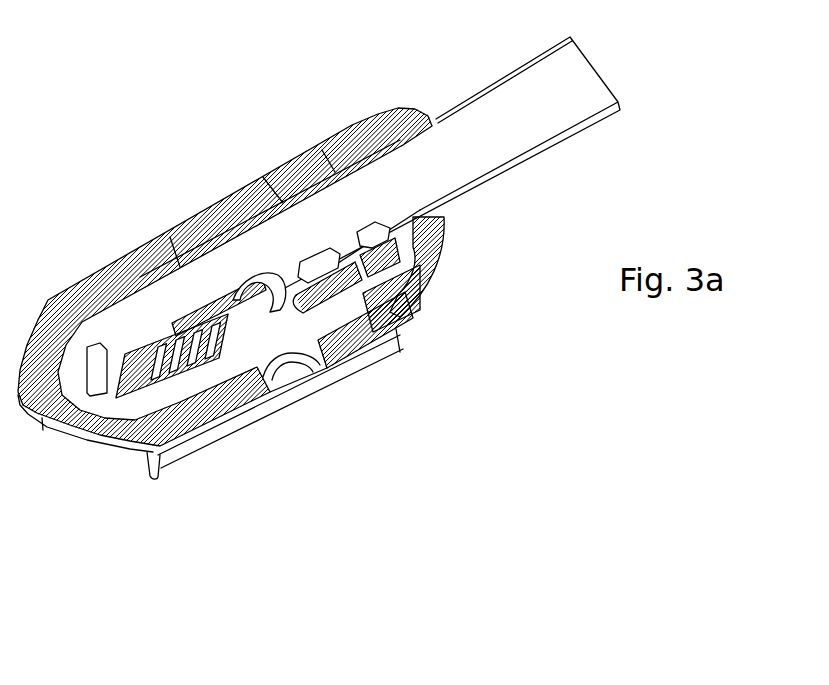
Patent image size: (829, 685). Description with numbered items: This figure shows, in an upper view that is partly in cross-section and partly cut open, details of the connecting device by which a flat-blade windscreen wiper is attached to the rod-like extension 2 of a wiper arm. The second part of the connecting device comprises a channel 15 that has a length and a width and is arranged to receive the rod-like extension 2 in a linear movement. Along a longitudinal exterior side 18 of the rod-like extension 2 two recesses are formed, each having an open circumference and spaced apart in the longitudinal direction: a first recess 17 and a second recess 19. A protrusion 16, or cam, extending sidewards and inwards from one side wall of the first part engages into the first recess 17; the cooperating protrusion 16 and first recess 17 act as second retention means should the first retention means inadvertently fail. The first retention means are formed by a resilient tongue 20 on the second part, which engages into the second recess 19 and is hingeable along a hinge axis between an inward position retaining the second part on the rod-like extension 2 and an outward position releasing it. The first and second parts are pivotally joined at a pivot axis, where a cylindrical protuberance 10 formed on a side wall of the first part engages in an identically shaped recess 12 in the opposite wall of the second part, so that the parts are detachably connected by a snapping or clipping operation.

The rod-like extension 2 is at (500, 80).
The longitudinal exterior side 18 is at (553, 143).
The resilient tongue 20 is at (268, 176).
The channel 15 is at (306, 267).
The second recess 19 is at (320, 262).
The first recess 17 is at (377, 224).
The protrusion 16 is at (440, 262).
The recess 12 is at (312, 355).
The cylindrical protuberance 10 is at (294, 383).